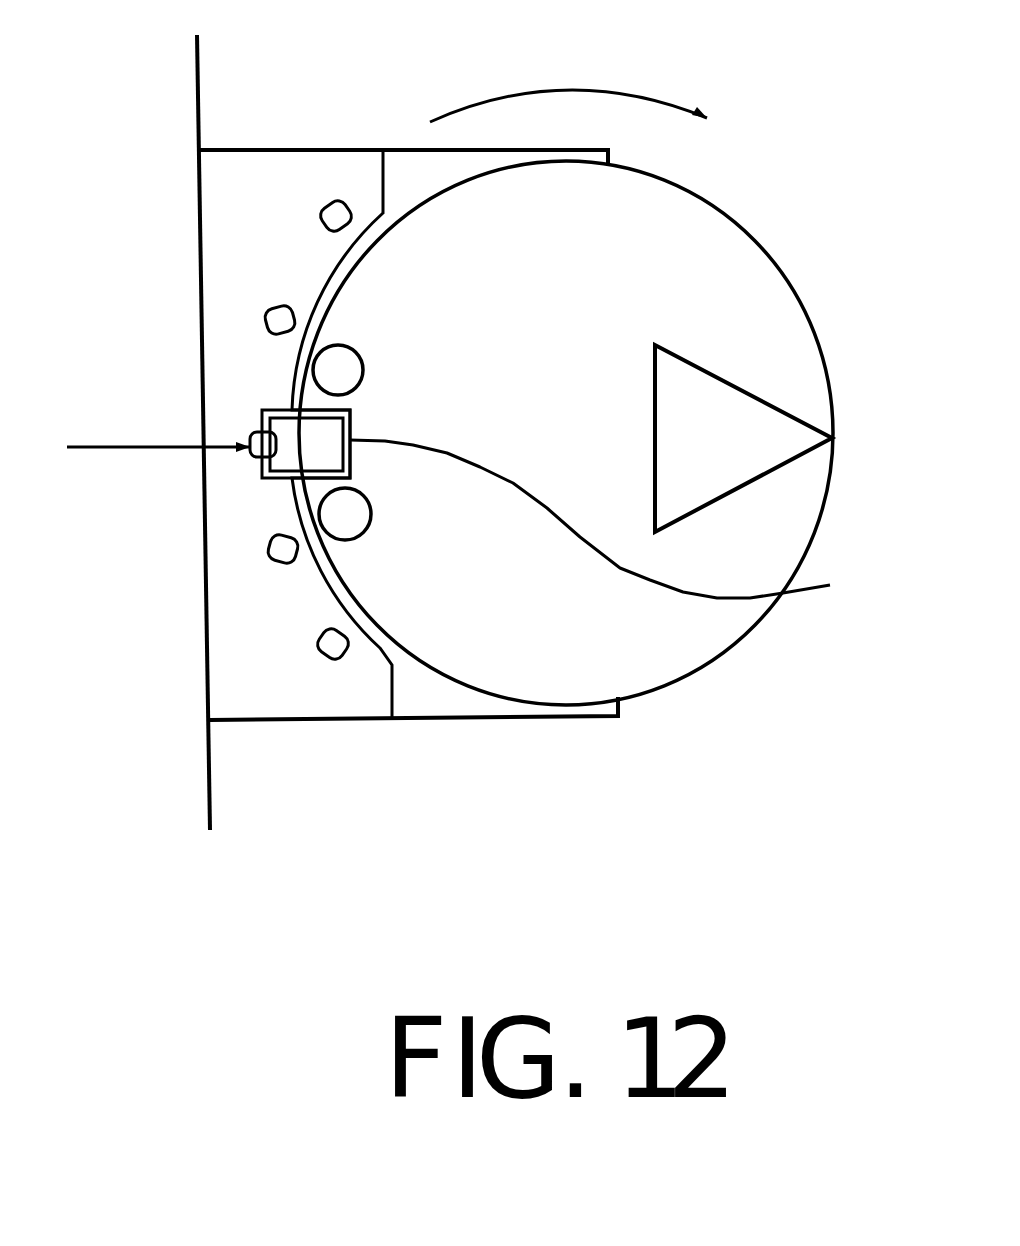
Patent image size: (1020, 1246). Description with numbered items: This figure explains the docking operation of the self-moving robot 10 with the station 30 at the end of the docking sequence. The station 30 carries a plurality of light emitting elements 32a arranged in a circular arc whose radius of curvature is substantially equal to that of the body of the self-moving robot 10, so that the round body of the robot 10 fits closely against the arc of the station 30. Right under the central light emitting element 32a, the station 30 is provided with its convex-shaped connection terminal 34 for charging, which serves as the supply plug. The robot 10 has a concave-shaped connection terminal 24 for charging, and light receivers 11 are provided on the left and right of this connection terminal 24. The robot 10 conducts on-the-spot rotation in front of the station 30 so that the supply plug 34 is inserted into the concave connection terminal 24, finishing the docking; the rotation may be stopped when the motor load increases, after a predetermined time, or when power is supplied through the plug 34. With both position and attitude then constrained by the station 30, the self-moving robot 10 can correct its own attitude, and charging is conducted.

The station 30 is at (256, 198).
The self-moving robot 10 is at (597, 428).
The light receivers 11 is at (549, 427).
The connection terminal for charging 34 is at (217, 406).
The connection terminal 24 is at (623, 524).
The light emitting elements 32a is at (226, 508).